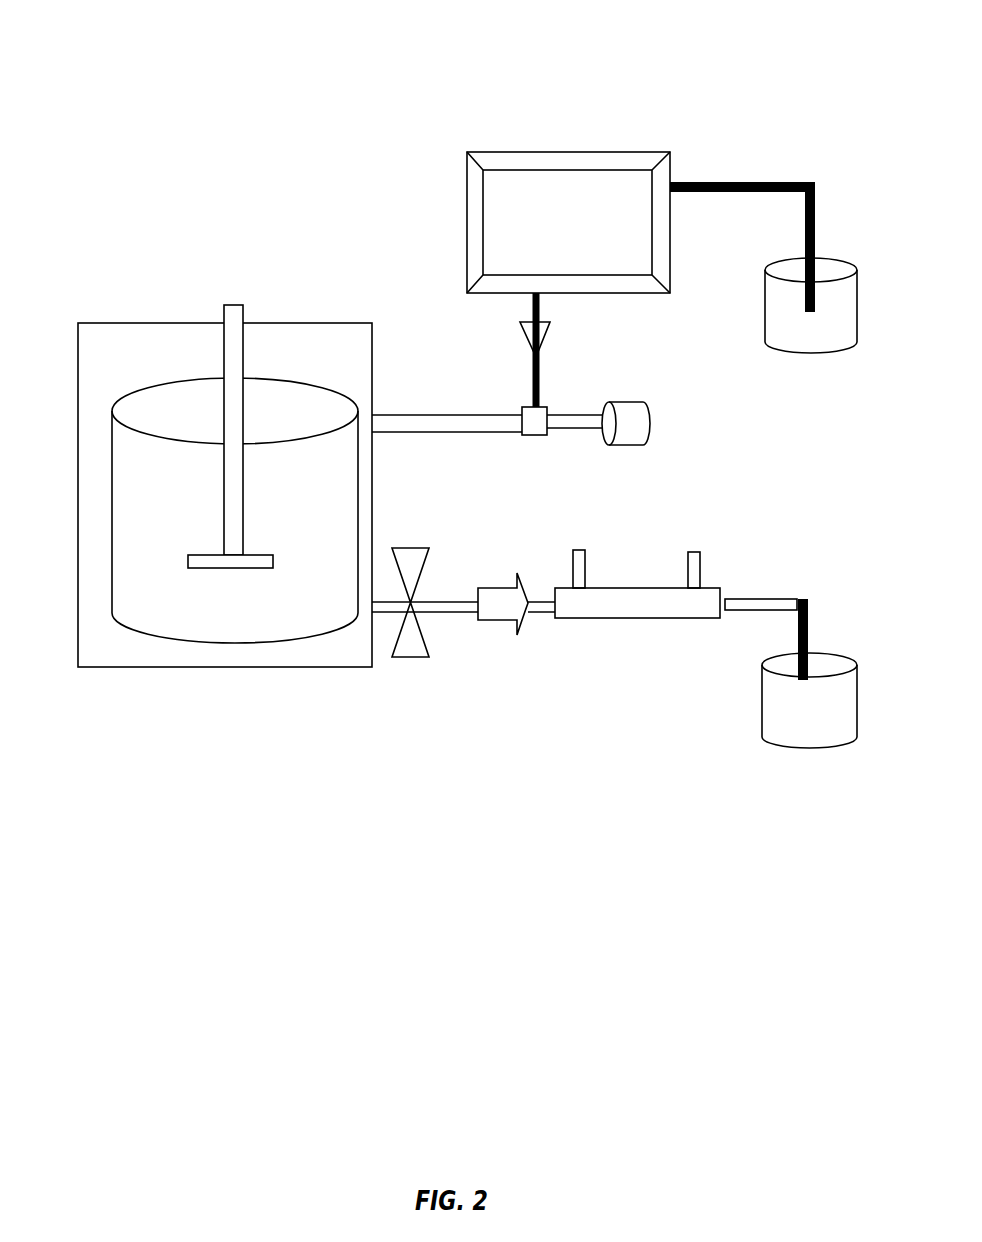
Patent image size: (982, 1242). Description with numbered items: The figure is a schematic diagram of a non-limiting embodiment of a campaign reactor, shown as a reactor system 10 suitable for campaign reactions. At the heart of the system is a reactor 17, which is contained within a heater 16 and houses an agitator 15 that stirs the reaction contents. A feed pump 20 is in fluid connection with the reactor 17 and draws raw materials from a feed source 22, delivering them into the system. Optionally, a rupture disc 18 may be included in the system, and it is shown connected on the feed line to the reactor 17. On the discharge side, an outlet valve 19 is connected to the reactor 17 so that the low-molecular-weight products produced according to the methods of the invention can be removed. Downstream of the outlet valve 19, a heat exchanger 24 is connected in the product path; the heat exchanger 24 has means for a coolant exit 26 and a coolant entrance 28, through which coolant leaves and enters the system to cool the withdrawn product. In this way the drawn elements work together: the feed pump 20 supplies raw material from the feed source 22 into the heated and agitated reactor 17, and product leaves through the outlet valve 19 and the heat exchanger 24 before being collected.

The reactor system 10 is at (158, 52).
The agitator 15 is at (232, 304).
The heater 16 is at (78, 410).
The reactor 17 is at (112, 492).
The rupture disc 18 is at (650, 405).
The outlet valve 19 is at (417, 546).
The feed pump 20 is at (480, 152).
The feed source 22 is at (830, 258).
The heat exchanger 24 is at (627, 622).
The coolant exit 26 is at (577, 550).
The coolant entrance 28 is at (694, 552).